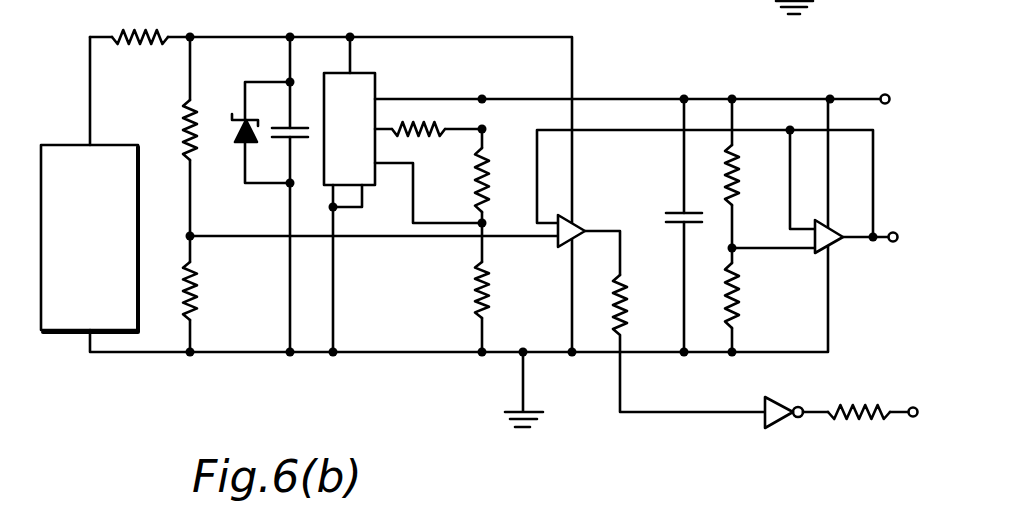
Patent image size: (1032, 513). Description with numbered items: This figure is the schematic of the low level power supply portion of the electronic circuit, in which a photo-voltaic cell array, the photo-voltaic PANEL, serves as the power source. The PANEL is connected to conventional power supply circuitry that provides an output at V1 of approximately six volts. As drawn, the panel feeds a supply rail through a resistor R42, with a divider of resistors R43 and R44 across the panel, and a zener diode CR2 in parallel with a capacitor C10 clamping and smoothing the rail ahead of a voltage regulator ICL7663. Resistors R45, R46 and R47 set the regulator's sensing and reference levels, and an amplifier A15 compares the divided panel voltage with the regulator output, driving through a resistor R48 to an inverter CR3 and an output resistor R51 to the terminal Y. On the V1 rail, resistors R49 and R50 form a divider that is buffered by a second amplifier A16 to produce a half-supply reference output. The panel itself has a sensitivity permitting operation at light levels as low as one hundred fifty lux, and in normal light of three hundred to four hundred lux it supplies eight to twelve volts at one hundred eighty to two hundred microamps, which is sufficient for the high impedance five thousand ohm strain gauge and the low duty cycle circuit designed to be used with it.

The resistor R42 is at (140, 22).
The resistor R43 is at (167, 130).
The resistor R44 is at (216, 291).
The resistor R45 is at (428, 141).
The resistor R46 is at (460, 180).
The resistor R47 is at (459, 290).
The resistor R48 is at (689, 343).
The resistor R49 is at (758, 175).
The resistor R50 is at (757, 295).
The resistor R51 is at (859, 399).
The zener diode CR2 is at (245, 132).
The inverter CR3 is at (792, 429).
The capacitor C10 is at (282, 148).
The voltage regulator IC ICL7663 is at (349, 194).
The amplifier A15 is at (590, 234).
The amplifier A16 is at (846, 249).
The power supply output V1 is at (901, 102).
The output terminal Y is at (915, 418).
The photo-voltaic panel PANEL is at (89, 238).